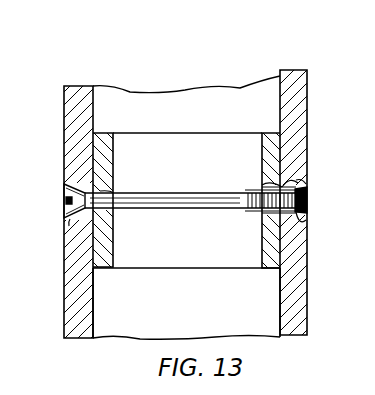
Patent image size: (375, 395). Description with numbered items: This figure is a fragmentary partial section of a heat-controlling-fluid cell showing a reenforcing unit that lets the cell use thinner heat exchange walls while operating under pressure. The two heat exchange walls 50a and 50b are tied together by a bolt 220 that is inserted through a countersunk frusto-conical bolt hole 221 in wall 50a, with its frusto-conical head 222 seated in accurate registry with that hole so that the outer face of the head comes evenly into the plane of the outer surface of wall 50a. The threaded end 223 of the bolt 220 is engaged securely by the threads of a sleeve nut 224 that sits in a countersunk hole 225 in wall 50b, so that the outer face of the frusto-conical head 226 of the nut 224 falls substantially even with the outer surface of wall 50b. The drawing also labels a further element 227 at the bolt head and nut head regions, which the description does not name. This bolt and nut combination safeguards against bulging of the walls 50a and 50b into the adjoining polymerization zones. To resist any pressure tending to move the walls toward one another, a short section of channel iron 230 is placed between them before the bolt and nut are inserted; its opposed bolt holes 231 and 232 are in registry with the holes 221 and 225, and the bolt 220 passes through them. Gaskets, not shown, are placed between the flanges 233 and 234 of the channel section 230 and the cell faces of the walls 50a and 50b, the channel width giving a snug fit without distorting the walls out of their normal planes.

The heat exchange wall 50a is at (73, 304).
The heat exchange wall 50b is at (298, 316).
The bolt 220 is at (192, 220).
The bolt hole 221 is at (70, 220).
The frusto-conical head 222 is at (68, 188).
The threaded end 223 is at (252, 212).
The sleeve nut 224 is at (292, 187).
The countersunk hole 225 is at (301, 182).
The frusto-conical head 226 is at (303, 231).
The seal 227 is at (66, 200).
The channel iron section 230 is at (205, 272).
The bolt hole 231 is at (113, 195).
The bolt hole 232 is at (262, 186).
The flange 233 is at (100, 140).
The flange 234 is at (318, 42).